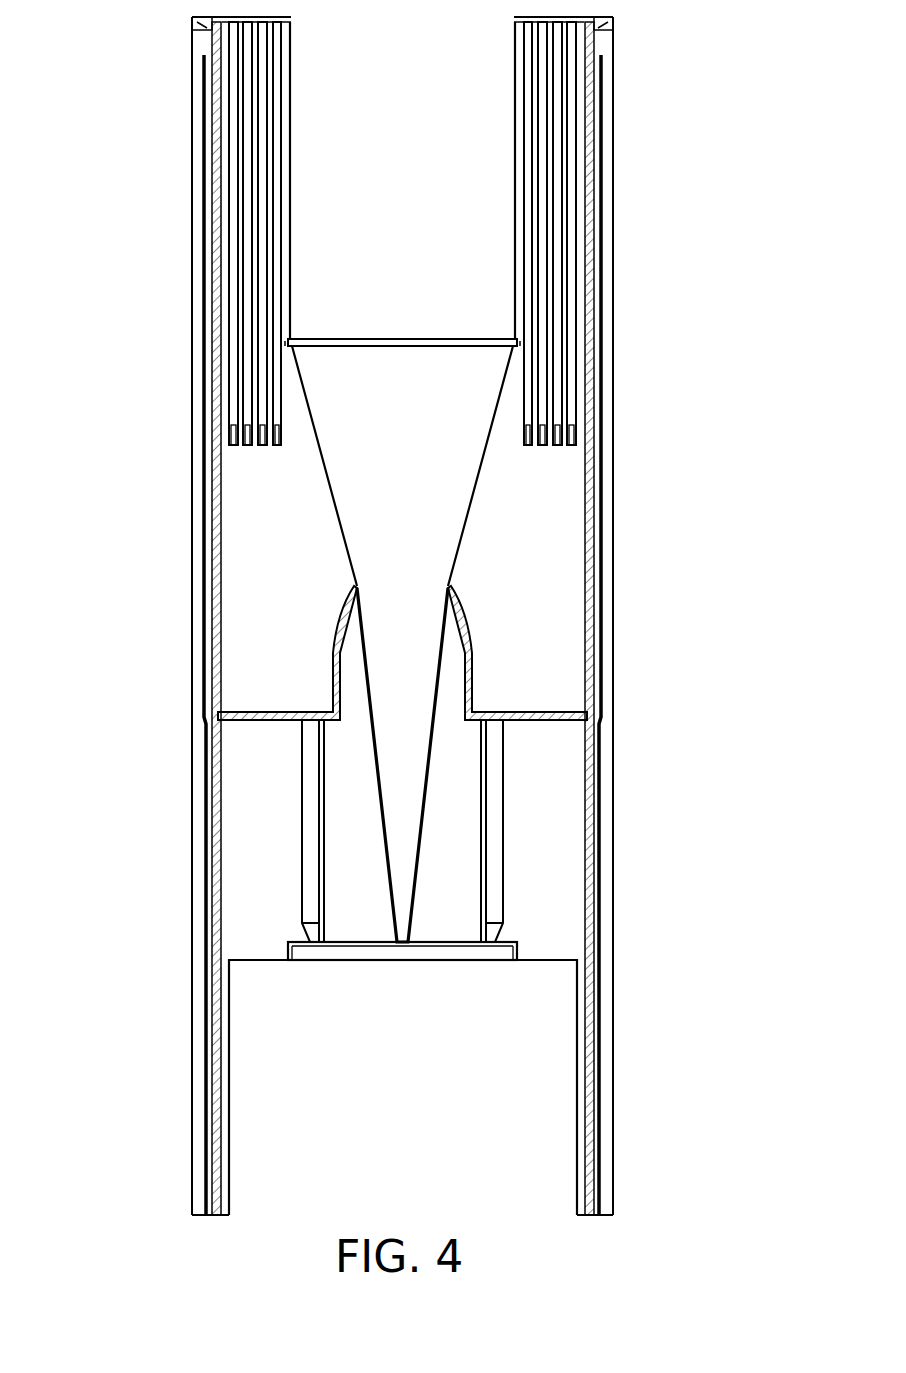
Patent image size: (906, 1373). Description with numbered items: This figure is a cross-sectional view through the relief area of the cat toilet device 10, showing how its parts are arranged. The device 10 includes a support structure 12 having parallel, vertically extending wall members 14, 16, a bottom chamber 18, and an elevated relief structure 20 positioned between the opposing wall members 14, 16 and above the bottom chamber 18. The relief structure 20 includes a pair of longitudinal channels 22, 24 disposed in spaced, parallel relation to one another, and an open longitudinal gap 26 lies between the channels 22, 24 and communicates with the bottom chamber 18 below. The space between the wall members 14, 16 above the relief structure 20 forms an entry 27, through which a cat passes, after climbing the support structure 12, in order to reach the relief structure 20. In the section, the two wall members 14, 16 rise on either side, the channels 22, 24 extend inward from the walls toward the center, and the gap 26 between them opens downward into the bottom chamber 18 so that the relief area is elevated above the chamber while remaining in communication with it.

The cat toilet device 10 is at (140, 122).
The support structure 12 is at (620, 288).
The wall member 14 is at (595, 132).
The wall member 16 is at (208, 208).
The bottom chamber 18 is at (540, 1057).
The relief structure 20 is at (478, 611).
The longitudinal channel 22 is at (268, 707).
The longitudinal channel 24 is at (540, 712).
The longitudinal gap 26 is at (390, 780).
The entry 27 is at (419, 177).